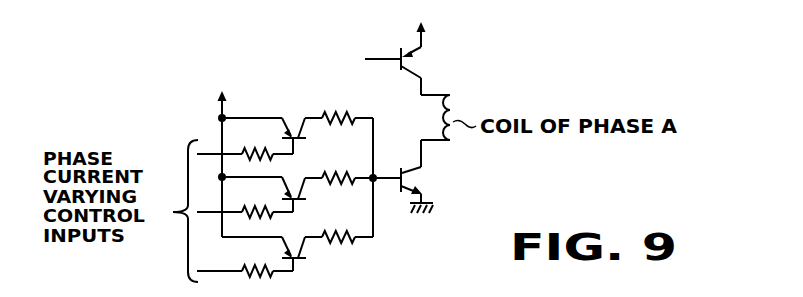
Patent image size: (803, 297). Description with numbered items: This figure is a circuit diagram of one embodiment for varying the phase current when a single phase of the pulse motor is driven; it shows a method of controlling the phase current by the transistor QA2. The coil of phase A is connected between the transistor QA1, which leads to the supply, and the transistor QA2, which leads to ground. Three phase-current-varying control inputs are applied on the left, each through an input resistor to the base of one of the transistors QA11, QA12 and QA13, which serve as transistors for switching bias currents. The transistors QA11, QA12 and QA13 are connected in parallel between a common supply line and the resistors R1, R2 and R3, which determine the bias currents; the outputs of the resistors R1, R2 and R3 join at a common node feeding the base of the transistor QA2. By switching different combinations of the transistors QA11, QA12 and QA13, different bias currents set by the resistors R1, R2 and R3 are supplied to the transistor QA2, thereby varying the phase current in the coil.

The transistor QA1 is at (417, 48).
The transistor QA2 is at (422, 176).
The transistor for switching bias currents QA11 is at (272, 125).
The transistor for switching bias currents QA12 is at (272, 194).
The transistor for switching bias currents QA13 is at (318, 256).
The resistor for determining bias currents R1 is at (347, 109).
The resistor for determining bias currents R2 is at (347, 168).
The resistor for determining bias currents R3 is at (347, 227).